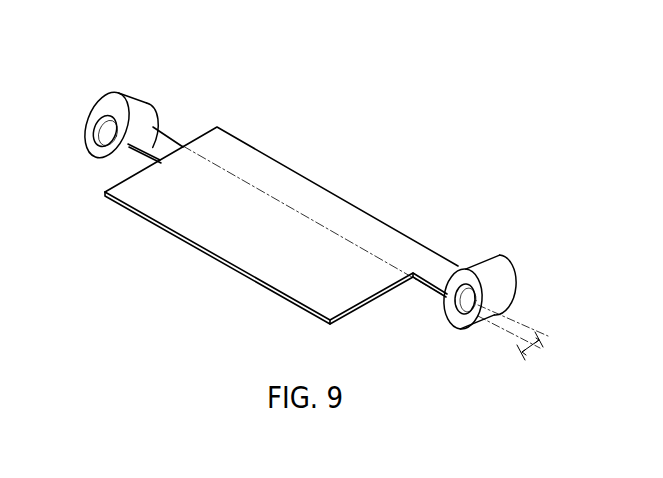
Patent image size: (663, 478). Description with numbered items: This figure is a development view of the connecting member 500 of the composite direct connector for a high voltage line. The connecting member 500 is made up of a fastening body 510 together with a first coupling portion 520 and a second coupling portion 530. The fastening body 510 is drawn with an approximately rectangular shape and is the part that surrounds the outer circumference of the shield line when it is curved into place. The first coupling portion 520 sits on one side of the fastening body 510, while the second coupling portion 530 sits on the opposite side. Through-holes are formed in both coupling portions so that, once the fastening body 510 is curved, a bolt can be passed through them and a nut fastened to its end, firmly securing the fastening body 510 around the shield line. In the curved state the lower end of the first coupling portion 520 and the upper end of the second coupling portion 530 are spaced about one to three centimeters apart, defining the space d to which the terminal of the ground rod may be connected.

The connecting member 500 is at (273, 25).
The fastening body 510 is at (310, 197).
The first coupling portion 520 is at (454, 272).
The second coupling portion 530 is at (102, 114).